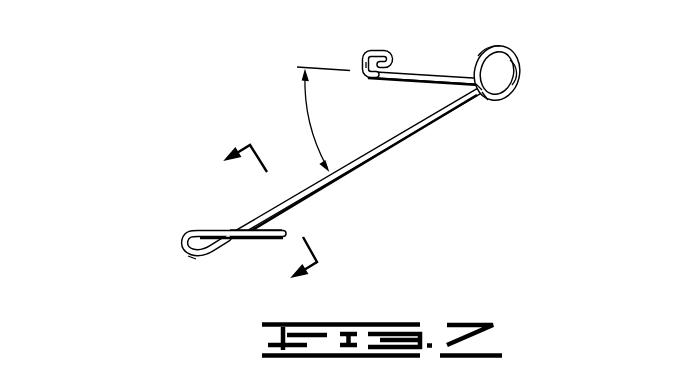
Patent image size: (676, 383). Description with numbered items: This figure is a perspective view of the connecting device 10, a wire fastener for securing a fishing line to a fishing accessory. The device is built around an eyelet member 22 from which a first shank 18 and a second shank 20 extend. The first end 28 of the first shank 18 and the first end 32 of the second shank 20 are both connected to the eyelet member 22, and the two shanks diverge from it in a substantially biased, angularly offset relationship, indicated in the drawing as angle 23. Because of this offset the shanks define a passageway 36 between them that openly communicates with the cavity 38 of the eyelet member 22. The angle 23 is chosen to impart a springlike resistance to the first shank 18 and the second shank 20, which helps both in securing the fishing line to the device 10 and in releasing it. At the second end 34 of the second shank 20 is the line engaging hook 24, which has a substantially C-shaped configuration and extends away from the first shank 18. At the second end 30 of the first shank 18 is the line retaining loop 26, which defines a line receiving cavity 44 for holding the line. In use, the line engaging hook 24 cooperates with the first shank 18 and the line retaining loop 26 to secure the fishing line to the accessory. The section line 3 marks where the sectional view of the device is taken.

The connecting device 10 is at (92, 36).
The first shank 18 is at (382, 157).
The second shank 20 is at (443, 66).
The eyelet member 22 is at (517, 54).
The angle 23 is at (305, 107).
The line engaging hook 24 is at (360, 60).
The line retaining loop 26 is at (205, 262).
The first end of first shank 28 is at (481, 100).
The second end of first shank 30 is at (217, 231).
The first end of second shank 32 is at (474, 62).
The second end of second shank 34 is at (397, 56).
The passageway 36 is at (478, 88).
The cavity 38 is at (499, 72).
The line receiving cavity 44 is at (190, 261).
The section line 3- 3 is at (261, 224).